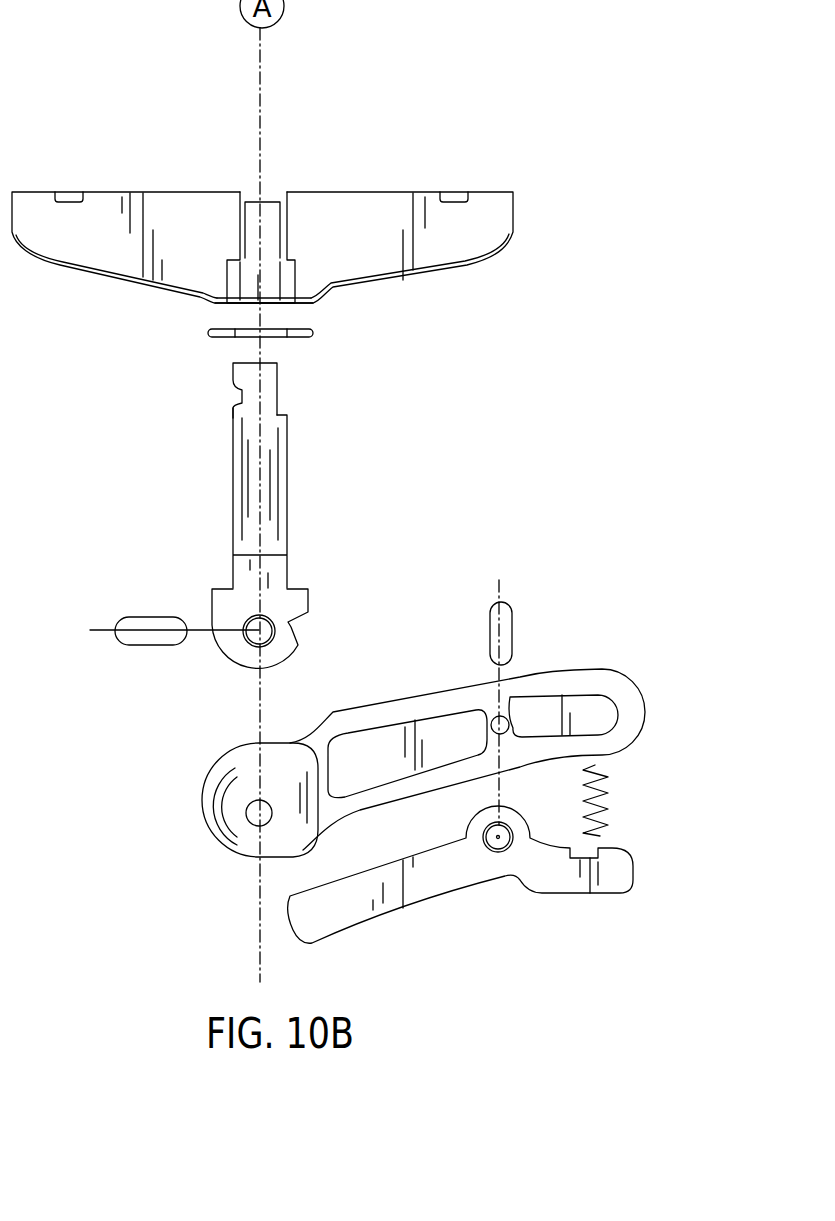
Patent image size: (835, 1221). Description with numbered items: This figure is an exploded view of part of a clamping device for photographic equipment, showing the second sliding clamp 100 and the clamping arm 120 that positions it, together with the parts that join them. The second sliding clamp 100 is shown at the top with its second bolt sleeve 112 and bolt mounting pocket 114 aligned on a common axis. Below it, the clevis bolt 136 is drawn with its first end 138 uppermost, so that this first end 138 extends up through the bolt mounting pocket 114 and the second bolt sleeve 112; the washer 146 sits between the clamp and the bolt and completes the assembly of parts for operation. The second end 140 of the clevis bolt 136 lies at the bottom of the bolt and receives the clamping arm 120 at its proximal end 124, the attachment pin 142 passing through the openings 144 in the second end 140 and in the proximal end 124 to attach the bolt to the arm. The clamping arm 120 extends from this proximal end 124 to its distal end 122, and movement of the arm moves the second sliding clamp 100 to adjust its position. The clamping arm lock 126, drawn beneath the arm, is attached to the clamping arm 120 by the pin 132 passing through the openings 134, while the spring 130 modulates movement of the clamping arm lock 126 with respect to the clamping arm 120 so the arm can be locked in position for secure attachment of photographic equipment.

The second sliding clamp 100 is at (382, 269).
The second bolt sleeve 112 is at (277, 200).
The bolt mounting pocket 114 is at (290, 298).
The washer 146 is at (208, 333).
The first end 138 is at (290, 363).
The clevis bolt 136 is at (290, 483).
The second end 140 is at (290, 660).
The attachment pin 142 is at (140, 647).
The openings 144 is at (250, 641).
The clamping arm 120 is at (400, 707).
The distal end 122 is at (648, 713).
The proximal end 124 is at (204, 800).
The clamping arm lock 126 is at (473, 887).
The spring 130 is at (612, 790).
The pin 132 is at (515, 640).
The openings 134 is at (494, 719).